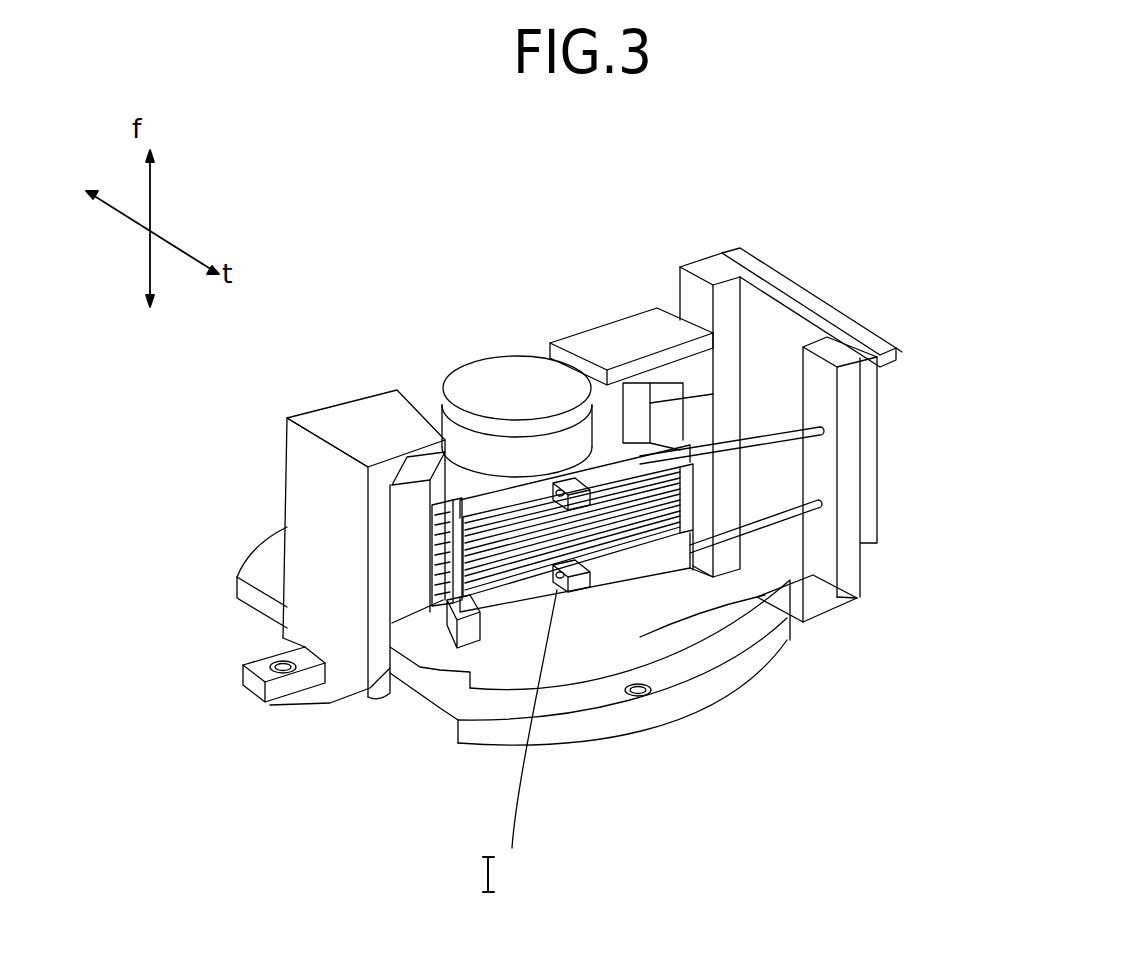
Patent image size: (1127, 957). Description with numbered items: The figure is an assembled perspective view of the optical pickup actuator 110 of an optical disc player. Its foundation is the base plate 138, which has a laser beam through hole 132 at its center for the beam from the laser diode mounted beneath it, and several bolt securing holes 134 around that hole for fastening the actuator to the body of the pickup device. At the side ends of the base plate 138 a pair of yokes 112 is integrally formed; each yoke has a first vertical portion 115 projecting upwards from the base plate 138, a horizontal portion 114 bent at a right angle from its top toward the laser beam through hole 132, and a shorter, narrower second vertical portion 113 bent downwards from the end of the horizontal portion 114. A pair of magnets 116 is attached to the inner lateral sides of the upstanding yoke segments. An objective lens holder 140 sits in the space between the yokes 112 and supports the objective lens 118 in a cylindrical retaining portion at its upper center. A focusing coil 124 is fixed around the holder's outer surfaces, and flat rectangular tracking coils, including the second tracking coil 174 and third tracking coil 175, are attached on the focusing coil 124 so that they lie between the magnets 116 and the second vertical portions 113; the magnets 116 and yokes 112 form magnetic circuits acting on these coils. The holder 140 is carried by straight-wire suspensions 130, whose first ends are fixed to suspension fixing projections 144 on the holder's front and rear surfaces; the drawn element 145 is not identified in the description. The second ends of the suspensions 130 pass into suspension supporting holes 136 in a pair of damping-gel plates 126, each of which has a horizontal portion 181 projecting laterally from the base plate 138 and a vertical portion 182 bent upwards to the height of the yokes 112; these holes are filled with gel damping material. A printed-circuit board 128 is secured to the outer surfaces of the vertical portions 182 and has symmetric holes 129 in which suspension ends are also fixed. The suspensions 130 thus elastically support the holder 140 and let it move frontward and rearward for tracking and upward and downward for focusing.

The optical pickup actuator 110 is at (258, 124).
The yoke 112 is at (641, 338).
The second vertical portion 113 is at (462, 450).
The horizontal portion 114 is at (347, 430).
The first vertical portion 115 is at (323, 508).
The magnet 116 is at (408, 500).
The objective lens 118 is at (510, 370).
The focusing coil 124 is at (520, 553).
The damping-gel plate 126 is at (702, 275).
The printed-circuit board 128 is at (763, 327).
The holes 129 is at (844, 313).
The suspension 130 is at (697, 490).
The laser beam through hole 132 is at (560, 657).
The bolt securing hole 134 is at (270, 660).
The suspension supporting hole 136 is at (822, 510).
The base plate 138 is at (498, 720).
The objective lens holder 140 is at (612, 447).
The suspension fixing projection 144 is at (580, 580).
The lower bracket 145 is at (560, 580).
The second tracking coil 174 is at (447, 590).
The third tracking coil 175 is at (767, 513).
The horizontal portion 181 is at (765, 595).
The vertical portion 182 is at (730, 300).